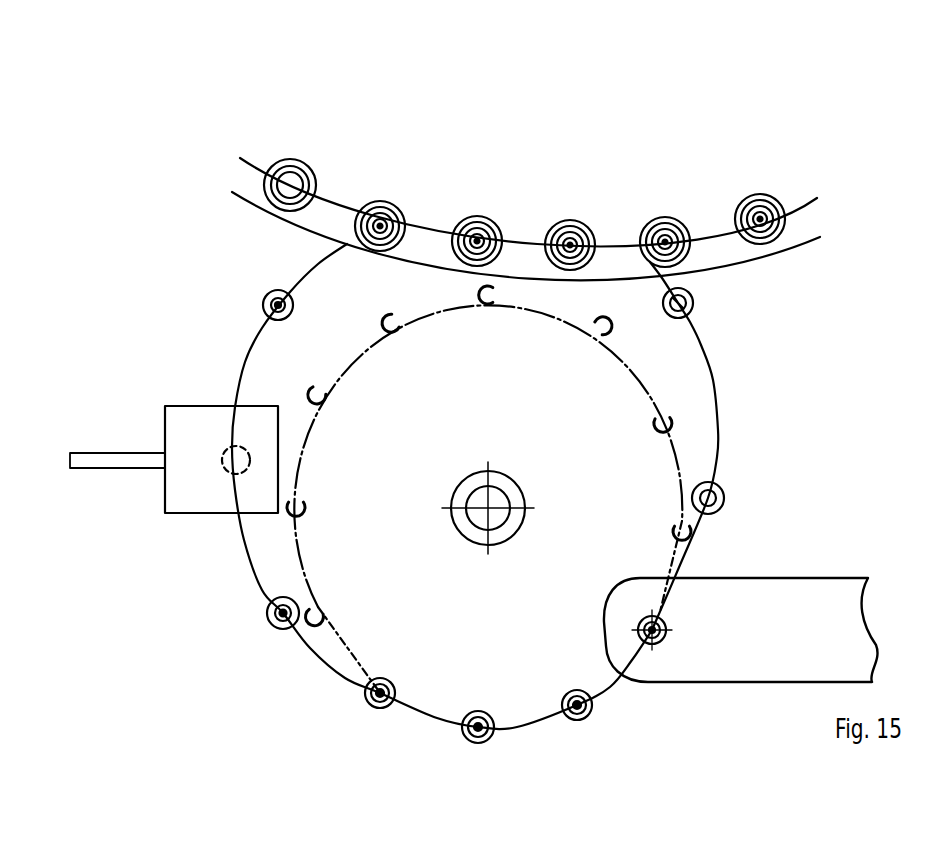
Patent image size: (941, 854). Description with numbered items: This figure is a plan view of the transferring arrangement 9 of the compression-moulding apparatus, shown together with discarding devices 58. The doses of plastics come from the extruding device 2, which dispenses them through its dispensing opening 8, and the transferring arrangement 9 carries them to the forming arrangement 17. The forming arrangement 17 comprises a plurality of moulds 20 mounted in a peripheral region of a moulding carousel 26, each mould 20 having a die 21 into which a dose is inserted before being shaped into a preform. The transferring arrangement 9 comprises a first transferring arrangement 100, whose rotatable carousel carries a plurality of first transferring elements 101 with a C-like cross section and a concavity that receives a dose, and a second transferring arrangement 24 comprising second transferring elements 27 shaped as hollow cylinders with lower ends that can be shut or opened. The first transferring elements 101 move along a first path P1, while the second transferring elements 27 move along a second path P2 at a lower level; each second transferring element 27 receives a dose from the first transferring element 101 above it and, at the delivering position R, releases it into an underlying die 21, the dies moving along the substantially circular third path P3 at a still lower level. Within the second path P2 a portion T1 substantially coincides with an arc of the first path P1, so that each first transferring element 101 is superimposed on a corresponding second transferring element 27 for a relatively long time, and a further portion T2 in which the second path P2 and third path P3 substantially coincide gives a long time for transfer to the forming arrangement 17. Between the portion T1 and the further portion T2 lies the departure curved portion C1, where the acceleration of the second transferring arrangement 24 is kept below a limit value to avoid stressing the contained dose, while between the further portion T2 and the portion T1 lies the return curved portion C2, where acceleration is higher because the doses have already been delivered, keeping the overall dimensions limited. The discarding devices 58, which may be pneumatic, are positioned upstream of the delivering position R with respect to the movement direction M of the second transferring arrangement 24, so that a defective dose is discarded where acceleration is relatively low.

The extruding device 2 is at (753, 658).
The dispensing opening 8 is at (681, 610).
The transferring arrangement 9 is at (550, 737).
The forming arrangement 17 is at (779, 162).
The mould 20 is at (745, 190).
The die 21 is at (281, 158).
The second transferring arrangement 24 is at (253, 300).
The moulding carousel 26 is at (803, 246).
The second transferring element 27 is at (724, 496).
The discarding devices 58 is at (165, 492).
The first transferring arrangement 100 is at (689, 416).
The first transferring element 101 is at (305, 623).
The first path P1 is at (628, 352).
The second path P2 is at (736, 379).
The third path P3 is at (333, 196).
The delivering position R is at (491, 186).
The portion T1 is at (448, 728).
The further portion T2 is at (529, 233).
The departure curved portion C1 is at (214, 383).
The return curved portion C2 is at (763, 411).
The movement direction M is at (222, 545).